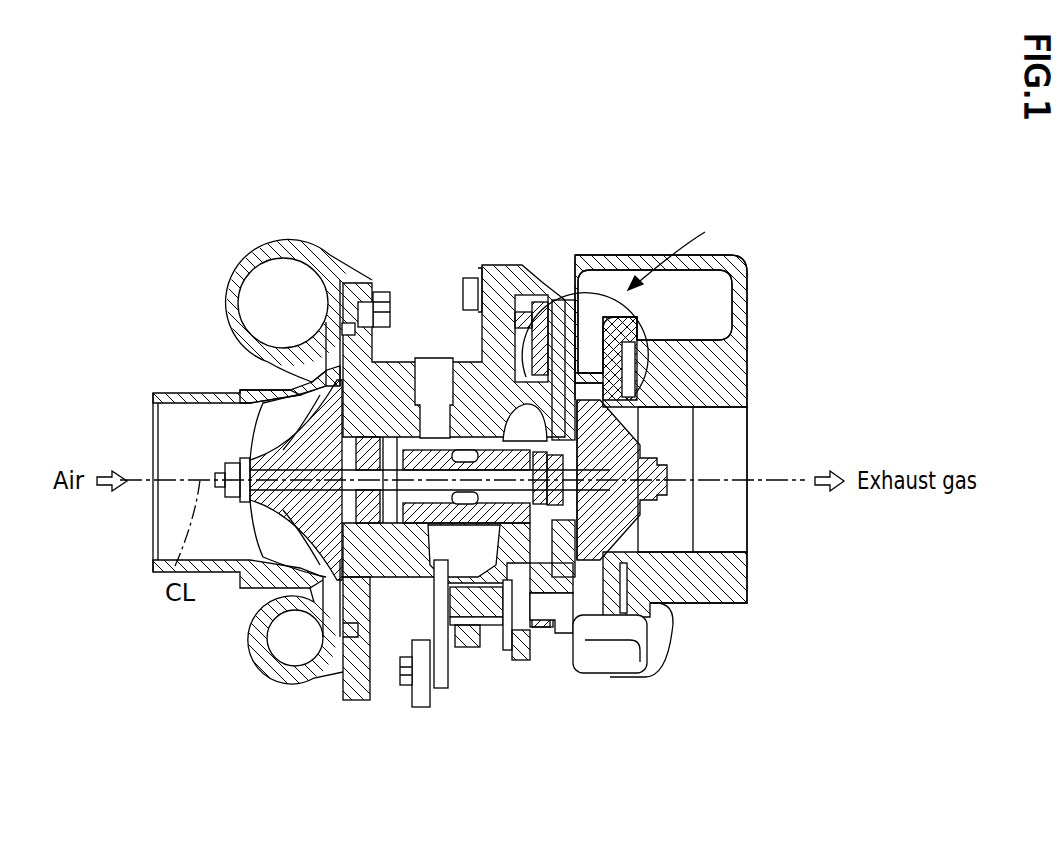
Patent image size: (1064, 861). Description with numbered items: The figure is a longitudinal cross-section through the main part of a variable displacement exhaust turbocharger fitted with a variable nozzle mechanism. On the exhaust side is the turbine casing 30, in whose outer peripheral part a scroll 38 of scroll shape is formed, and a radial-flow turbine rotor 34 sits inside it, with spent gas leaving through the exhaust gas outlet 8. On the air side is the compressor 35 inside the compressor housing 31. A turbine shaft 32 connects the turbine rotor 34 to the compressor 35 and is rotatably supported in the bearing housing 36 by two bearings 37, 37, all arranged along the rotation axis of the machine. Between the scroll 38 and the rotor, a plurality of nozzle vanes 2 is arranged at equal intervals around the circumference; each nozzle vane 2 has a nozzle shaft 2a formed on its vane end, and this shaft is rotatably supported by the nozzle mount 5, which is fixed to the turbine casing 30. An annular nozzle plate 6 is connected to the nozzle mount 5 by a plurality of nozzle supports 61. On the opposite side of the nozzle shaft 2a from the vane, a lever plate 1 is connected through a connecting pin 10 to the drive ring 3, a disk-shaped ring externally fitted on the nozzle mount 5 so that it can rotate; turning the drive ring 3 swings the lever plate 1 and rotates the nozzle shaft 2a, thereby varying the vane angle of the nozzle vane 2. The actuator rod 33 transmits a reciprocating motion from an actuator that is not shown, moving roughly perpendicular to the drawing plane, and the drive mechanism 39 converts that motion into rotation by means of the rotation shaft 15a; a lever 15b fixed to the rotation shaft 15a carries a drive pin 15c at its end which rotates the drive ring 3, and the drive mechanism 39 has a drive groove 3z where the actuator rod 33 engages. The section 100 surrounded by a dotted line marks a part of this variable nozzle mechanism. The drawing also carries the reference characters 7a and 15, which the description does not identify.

The lever plate 1 is at (508, 395).
The nozzle vane 2 is at (613, 357).
The nozzle shaft 2a is at (590, 373).
The drive ring 3 is at (535, 288).
The drive groove 3z is at (573, 605).
The nozzle mount 5 is at (560, 592).
The nozzle plate 6 is at (617, 382).
The compressor scroll passage 7a is at (253, 307).
The exhaust gas outlet 8 is at (727, 432).
The connecting pin 10 is at (498, 275).
The bracket plate 15 is at (443, 688).
The rotation shaft 15a is at (467, 607).
The lever 15b is at (540, 623).
The drive pin 15c is at (520, 647).
The turbine casing 30 is at (740, 292).
The compressor housing 31 is at (240, 268).
The turbine shaft 32 is at (575, 558).
The actuator rod 33 is at (408, 700).
The turbine rotor 34 is at (623, 532).
The compressor 35 is at (293, 423).
The bearing housing 36 is at (372, 292).
The bearing 37 is at (520, 487).
The scroll 38 is at (675, 285).
The drive mechanism 39 is at (390, 690).
The nozzle support 61 is at (590, 610).
The section surrounded by dotted line 100 is at (675, 246).